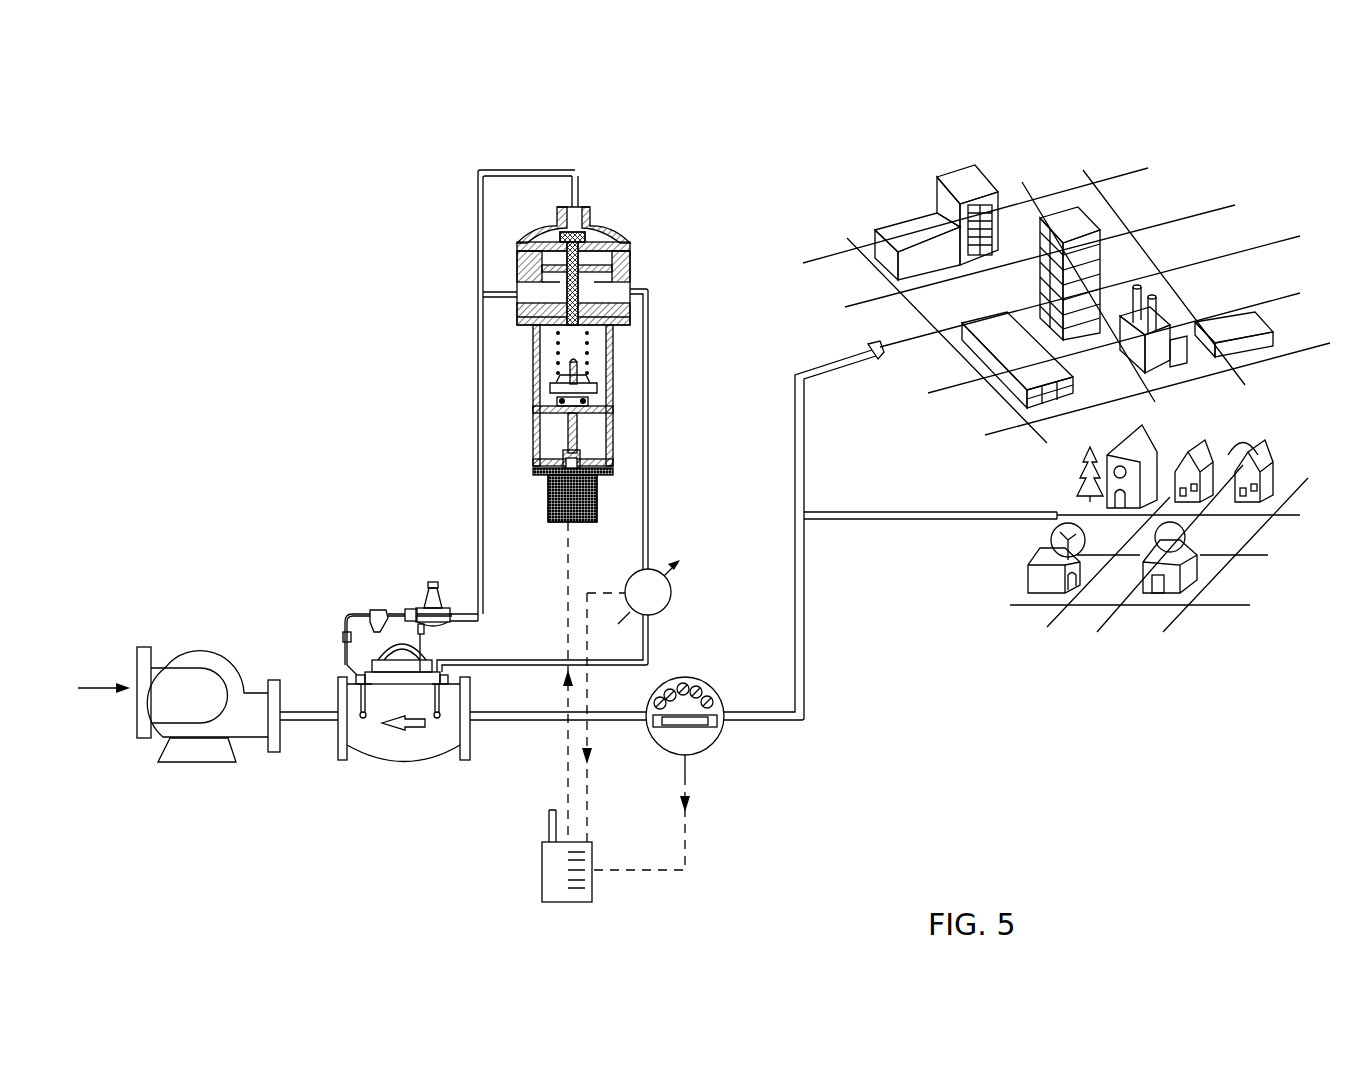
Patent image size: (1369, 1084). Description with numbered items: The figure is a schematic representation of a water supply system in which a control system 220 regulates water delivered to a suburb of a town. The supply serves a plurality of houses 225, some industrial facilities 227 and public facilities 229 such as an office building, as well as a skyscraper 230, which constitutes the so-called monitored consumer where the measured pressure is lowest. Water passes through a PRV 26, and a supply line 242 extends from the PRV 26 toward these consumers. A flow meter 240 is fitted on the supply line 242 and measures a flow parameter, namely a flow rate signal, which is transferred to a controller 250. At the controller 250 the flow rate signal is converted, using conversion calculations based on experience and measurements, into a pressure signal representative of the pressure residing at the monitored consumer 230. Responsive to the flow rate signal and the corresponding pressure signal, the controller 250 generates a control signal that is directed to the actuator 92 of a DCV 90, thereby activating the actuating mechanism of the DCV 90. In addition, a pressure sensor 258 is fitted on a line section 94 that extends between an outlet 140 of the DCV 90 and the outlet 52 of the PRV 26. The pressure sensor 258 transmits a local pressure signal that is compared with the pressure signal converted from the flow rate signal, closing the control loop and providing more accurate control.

The control system 220 is at (418, 164).
The DCV 90 is at (603, 176).
The outlet of the DCV 140 is at (478, 300).
The line section 94 is at (652, 322).
The actuator 92 is at (548, 512).
The pressure sensor 258 is at (669, 600).
The flow meter 240 is at (687, 680).
The controller 250 is at (541, 878).
The supply line 242 is at (806, 636).
The PRV 26 is at (412, 765).
The outlet of the PRV 52 is at (470, 742).
The public facilities 229 is at (930, 232).
The skyscraper 230 is at (1085, 228).
The industrial facilities 227 is at (1170, 335).
The houses 225 is at (1260, 445).